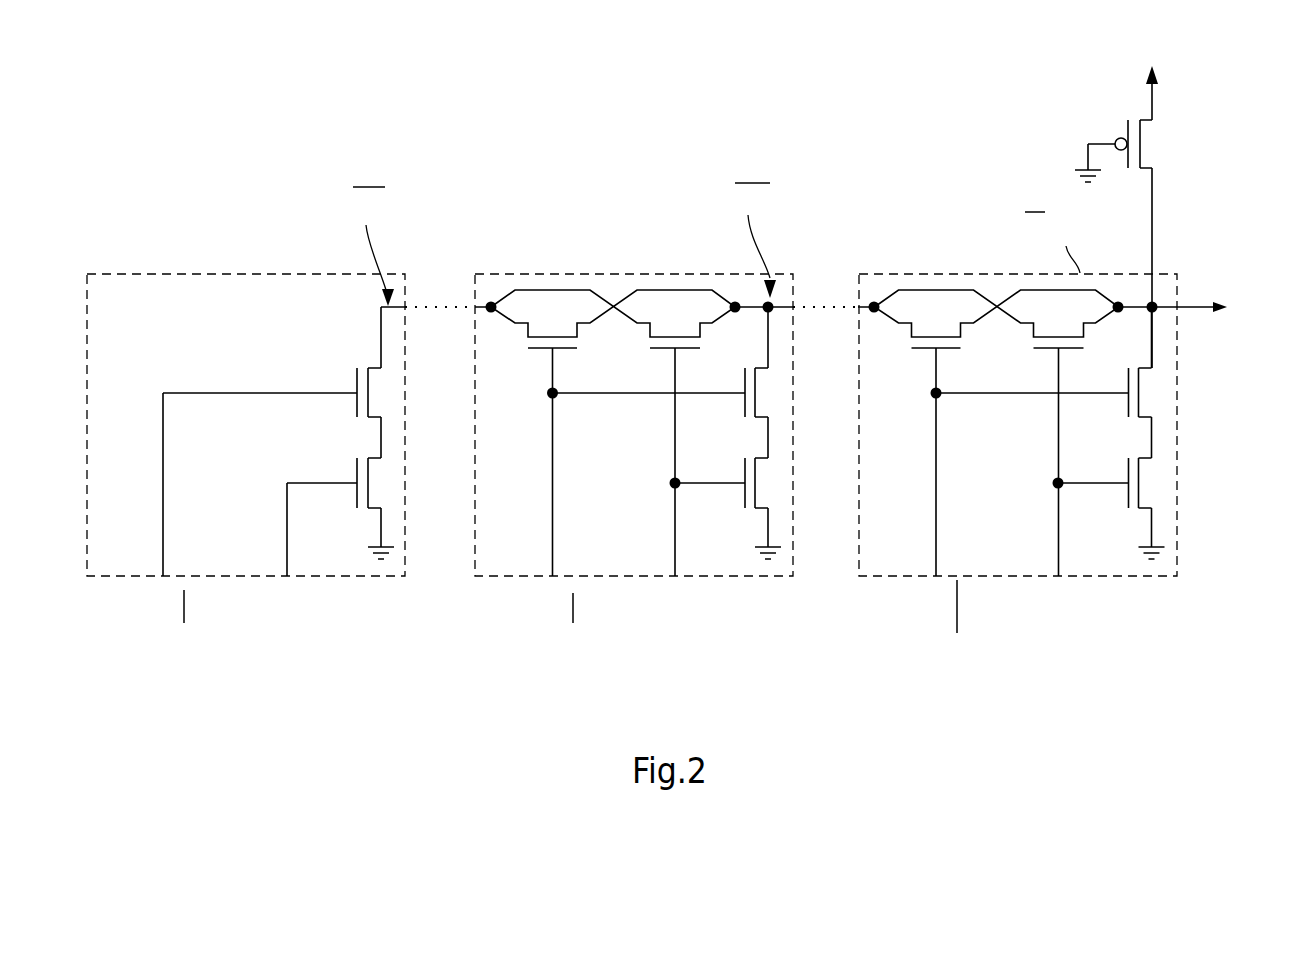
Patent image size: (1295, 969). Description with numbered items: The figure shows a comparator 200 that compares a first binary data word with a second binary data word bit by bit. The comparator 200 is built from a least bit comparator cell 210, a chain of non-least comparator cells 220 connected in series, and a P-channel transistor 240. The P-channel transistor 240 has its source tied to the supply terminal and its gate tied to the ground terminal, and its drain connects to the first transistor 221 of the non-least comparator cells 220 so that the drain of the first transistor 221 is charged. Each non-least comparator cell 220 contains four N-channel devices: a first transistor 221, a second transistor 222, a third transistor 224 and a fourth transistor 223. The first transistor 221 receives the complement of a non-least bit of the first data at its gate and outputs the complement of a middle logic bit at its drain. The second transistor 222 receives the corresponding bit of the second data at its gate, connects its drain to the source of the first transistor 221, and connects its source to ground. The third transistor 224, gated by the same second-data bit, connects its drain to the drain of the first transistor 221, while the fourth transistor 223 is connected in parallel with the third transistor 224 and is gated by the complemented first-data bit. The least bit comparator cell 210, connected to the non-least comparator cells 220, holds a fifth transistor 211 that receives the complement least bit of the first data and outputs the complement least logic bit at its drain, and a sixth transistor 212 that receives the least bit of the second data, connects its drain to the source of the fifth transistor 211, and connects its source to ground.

The comparator 200 is at (124, 168).
The least bit comparator cell 210 is at (193, 273).
The fifth transistor 211 is at (383, 415).
The sixth transistor 212 is at (383, 508).
The non-least comparator cell 220 is at (535, 273).
The first transistor 221 is at (770, 415).
The second transistor 222 is at (770, 508).
The fourth transistor 223 is at (543, 348).
The third transistor 224 is at (665, 348).
The P-channel transistor 240 is at (1126, 131).